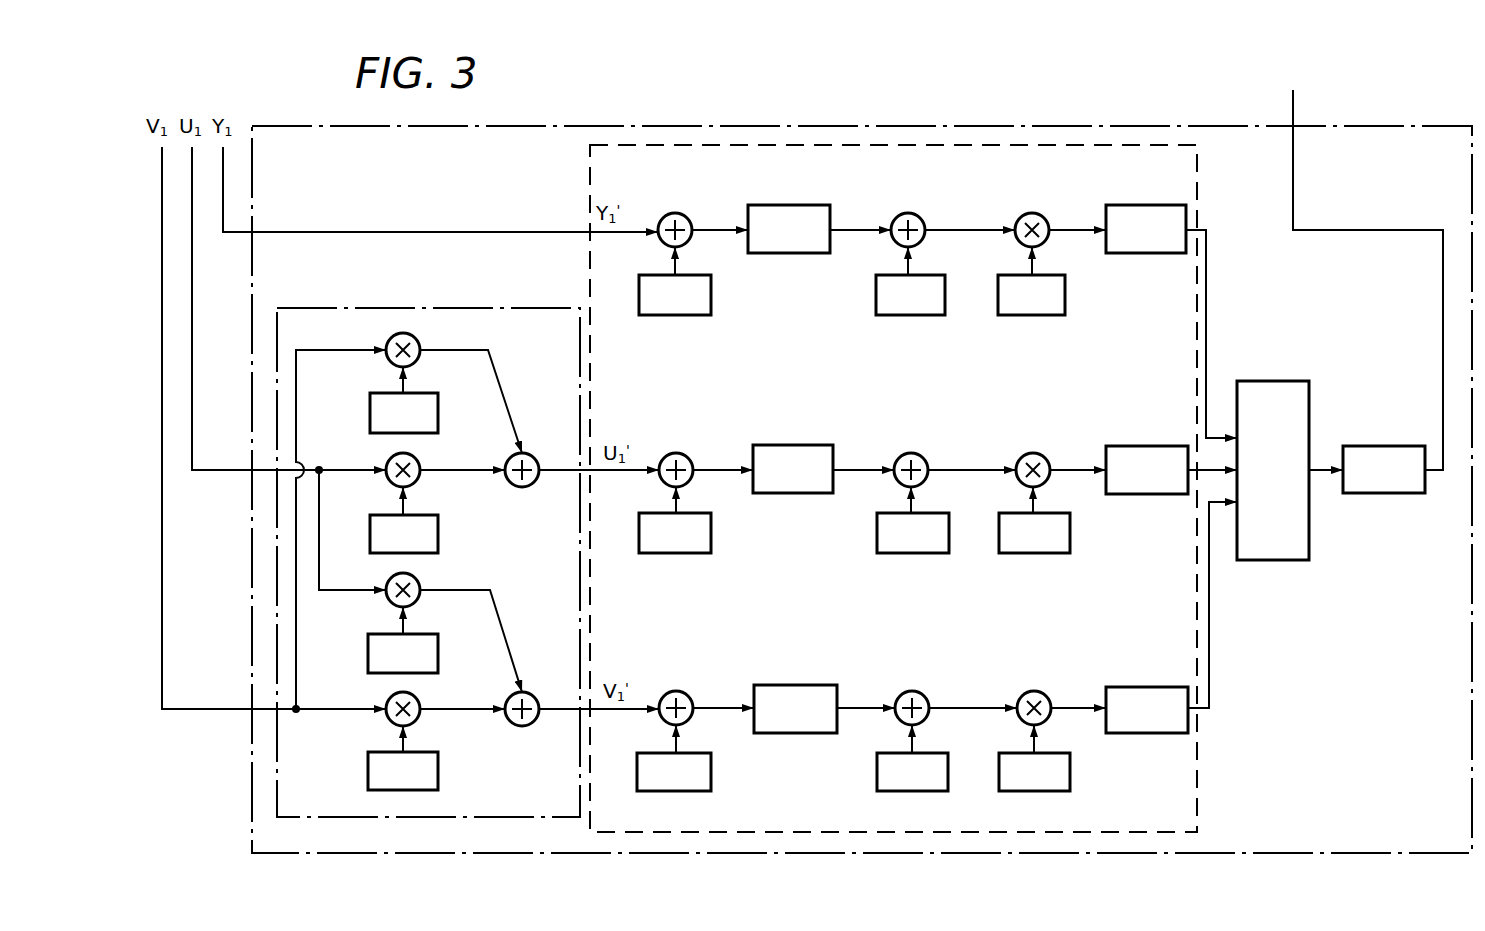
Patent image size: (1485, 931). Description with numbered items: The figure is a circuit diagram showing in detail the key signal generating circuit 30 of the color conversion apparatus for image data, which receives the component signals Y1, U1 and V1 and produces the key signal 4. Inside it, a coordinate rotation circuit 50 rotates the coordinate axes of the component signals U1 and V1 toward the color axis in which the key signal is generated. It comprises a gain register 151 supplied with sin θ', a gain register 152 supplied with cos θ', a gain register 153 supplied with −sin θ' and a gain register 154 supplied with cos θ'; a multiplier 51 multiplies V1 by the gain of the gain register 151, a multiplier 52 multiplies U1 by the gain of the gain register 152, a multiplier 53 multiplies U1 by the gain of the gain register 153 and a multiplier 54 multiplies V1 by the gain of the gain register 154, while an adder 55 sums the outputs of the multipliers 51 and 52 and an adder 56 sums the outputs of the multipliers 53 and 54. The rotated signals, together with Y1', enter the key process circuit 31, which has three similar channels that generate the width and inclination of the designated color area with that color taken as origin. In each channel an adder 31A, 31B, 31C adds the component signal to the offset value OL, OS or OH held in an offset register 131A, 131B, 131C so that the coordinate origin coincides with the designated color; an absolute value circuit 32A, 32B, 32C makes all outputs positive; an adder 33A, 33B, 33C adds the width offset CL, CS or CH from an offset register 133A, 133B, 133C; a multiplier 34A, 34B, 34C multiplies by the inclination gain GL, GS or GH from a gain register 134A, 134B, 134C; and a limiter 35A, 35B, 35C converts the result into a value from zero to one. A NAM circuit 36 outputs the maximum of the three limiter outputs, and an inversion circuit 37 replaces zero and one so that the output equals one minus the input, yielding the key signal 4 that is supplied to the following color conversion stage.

The key signal 4 is at (1293, 100).
The key signal generating circuit 30 is at (862, 489).
The key process circuit 31 is at (843, 145).
The adder 31A is at (665, 216).
The adder 31B is at (665, 456).
The adder 31C is at (665, 694).
The absolute value circuit 32A is at (757, 205).
The absolute value circuit 32B is at (760, 445).
The absolute value circuit 32C is at (762, 685).
The adder 33A is at (900, 214).
The adder 33B is at (905, 454).
The adder 33C is at (905, 692).
The multiplier 34A is at (1035, 214).
The multiplier 34B is at (1022, 455).
The multiplier 34C is at (1038, 692).
The limiter 35A is at (1186, 240).
The limiter 35B is at (1143, 446).
The limiter 35C is at (1188, 722).
The NAM circuit 36 is at (1262, 381).
The inversion circuit 37 is at (1358, 493).
The coordinate rotation circuit 50 is at (302, 308).
The multiplier 51 is at (413, 338).
The multiplier 52 is at (416, 483).
The multiplier 53 is at (415, 578).
The multiplier 54 is at (417, 721).
The adder 55 is at (522, 453).
The adder 56 is at (522, 692).
The offset register 131A is at (711, 290).
The offset register 131B is at (711, 528).
The offset register 131C is at (711, 765).
The offset register 133A is at (880, 315).
The offset register 133B is at (882, 553).
The offset register 133C is at (884, 791).
The gain register 134A is at (1065, 290).
The gain register 134B is at (1070, 528).
The gain register 134C is at (1070, 763).
The gain register 151 is at (438, 409).
The gain register 152 is at (438, 533).
The gain register 153 is at (425, 634).
The gain register 154 is at (438, 776).